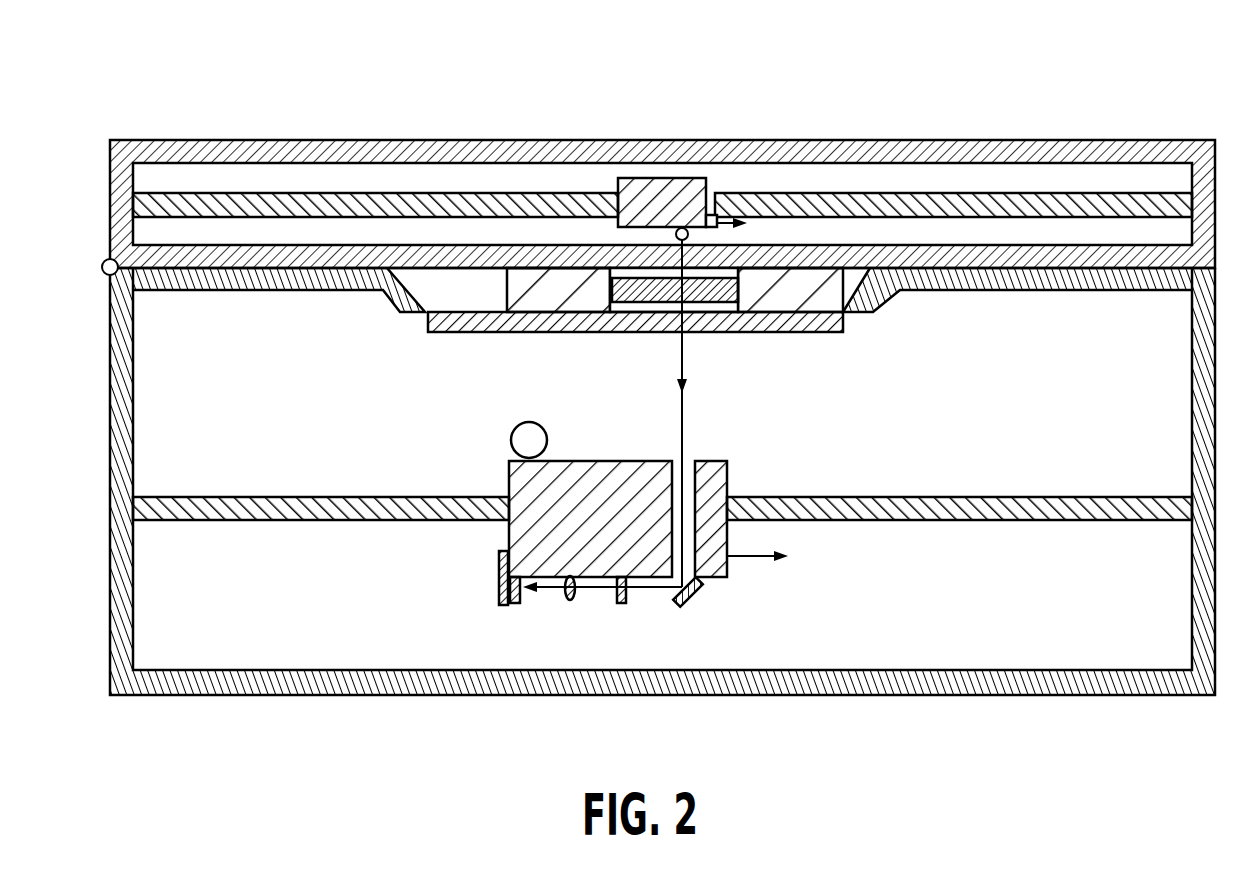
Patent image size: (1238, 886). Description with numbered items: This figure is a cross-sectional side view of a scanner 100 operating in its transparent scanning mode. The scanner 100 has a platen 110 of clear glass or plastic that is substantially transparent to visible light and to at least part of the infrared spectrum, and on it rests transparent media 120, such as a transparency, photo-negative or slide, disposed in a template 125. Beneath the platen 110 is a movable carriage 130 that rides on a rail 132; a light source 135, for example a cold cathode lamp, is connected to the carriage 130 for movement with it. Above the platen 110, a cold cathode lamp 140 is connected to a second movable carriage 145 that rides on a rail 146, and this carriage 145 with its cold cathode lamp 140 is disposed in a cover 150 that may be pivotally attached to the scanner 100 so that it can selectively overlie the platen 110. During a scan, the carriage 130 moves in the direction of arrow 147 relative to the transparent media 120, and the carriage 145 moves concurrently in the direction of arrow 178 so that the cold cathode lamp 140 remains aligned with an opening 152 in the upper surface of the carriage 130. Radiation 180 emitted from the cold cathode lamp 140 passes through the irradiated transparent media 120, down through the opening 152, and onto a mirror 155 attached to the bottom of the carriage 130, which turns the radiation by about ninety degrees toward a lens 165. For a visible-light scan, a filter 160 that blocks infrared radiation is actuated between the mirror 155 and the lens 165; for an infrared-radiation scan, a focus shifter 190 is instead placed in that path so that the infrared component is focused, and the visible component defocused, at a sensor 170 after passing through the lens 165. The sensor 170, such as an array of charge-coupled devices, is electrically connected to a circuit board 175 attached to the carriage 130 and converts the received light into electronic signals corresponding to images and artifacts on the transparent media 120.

The scanner 100 is at (688, 84).
The platen 110 is at (443, 333).
The transparent media 120 is at (640, 300).
The template 125 is at (565, 292).
The movable carriage 130 is at (528, 525).
The rail 132 is at (810, 497).
The light source 135 is at (511, 438).
The cold cathode lamp 140 is at (688, 235).
The movable carriage 145 is at (657, 183).
The rail 146 is at (856, 195).
The arrow 147 is at (757, 557).
The cover 150 is at (110, 228).
The opening 152 is at (688, 462).
The mirror 155 is at (697, 592).
The filter 160 is at (622, 604).
The lens 165 is at (570, 600).
The sensor 170 is at (515, 604).
The circuit board 175 is at (499, 606).
The arrow 178 is at (722, 197).
The radiation 180 is at (684, 362).
The focus shifter 190 is at (621, 590).